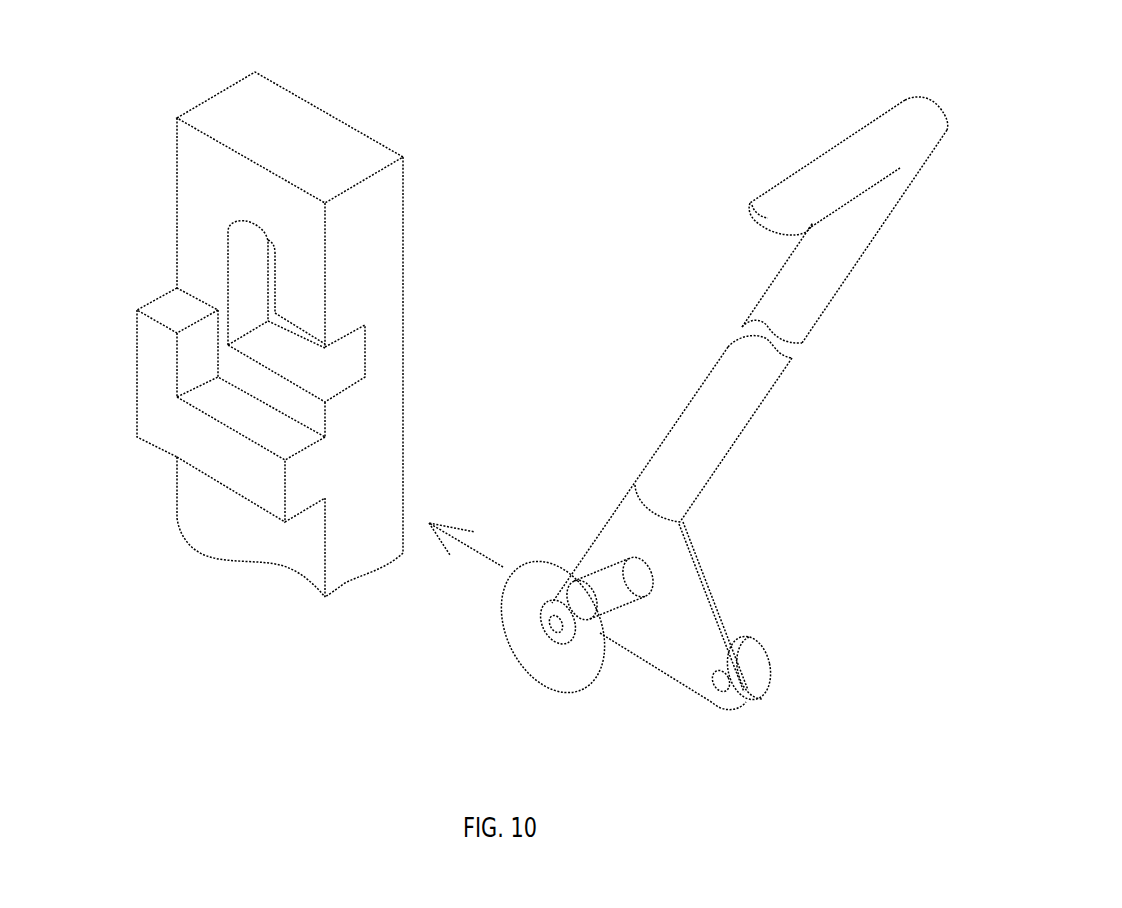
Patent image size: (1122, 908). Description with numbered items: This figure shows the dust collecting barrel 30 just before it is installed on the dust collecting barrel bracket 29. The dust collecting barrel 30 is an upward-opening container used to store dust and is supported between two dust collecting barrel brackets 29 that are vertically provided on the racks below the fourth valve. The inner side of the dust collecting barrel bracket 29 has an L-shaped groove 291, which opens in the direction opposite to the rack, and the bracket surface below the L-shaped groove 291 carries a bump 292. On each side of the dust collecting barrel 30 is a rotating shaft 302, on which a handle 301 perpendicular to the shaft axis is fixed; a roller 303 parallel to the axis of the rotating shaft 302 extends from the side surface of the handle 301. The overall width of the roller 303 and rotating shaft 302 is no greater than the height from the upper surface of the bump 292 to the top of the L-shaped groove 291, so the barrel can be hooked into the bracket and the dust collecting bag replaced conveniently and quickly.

The dust collecting barrel bracket 29 is at (255, 523).
The L-shaped groove 291 is at (253, 287).
The bump 292 is at (180, 420).
The dust collecting barrel 30 is at (567, 670).
The handle 301 is at (807, 197).
The rotating shaft 302 is at (613, 583).
The roller 303 is at (758, 670).